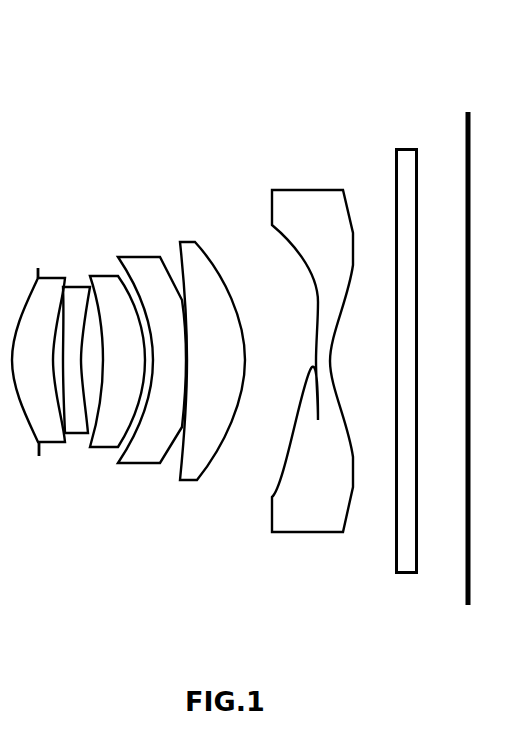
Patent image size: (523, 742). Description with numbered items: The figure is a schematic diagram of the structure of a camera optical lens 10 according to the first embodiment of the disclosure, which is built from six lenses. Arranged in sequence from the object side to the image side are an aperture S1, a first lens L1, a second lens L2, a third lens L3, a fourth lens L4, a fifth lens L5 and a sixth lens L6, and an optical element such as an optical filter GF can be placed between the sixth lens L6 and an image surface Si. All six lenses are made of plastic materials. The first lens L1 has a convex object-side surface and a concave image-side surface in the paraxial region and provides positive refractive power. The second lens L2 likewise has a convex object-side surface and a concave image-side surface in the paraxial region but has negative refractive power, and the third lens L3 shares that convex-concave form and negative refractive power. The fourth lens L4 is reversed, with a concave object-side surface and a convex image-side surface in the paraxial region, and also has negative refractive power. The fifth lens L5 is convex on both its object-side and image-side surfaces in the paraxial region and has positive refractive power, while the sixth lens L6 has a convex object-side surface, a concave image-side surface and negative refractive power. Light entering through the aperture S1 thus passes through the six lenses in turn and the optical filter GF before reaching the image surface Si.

The camera optical lens 10 is at (253, 57).
The aperture S1 is at (25, 356).
The first lens L1 is at (38, 343).
The second lens L2 is at (76, 344).
The third lens L3 is at (117, 347).
The fourth lens L4 is at (152, 344).
The fifth lens L5 is at (211, 345).
The sixth lens L6 is at (312, 346).
The optical filter GF is at (402, 348).
The image surface Si is at (470, 348).